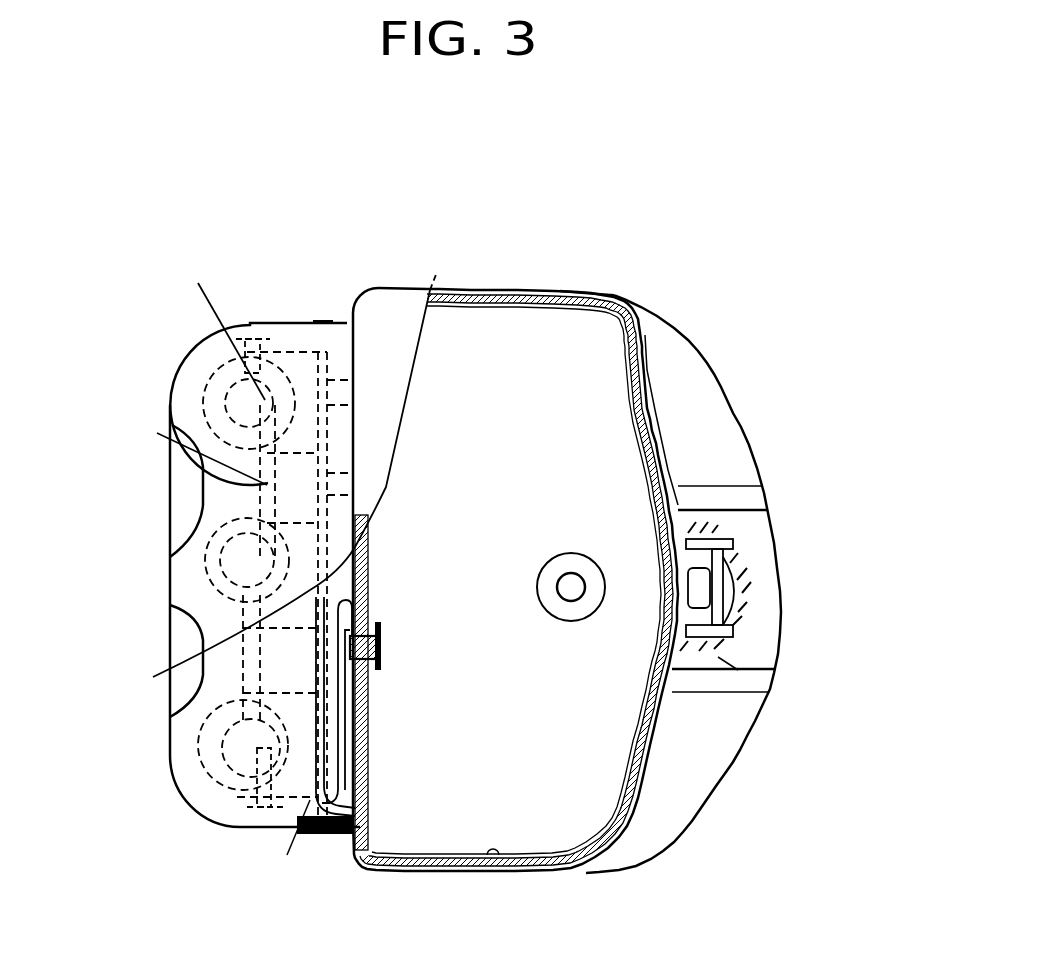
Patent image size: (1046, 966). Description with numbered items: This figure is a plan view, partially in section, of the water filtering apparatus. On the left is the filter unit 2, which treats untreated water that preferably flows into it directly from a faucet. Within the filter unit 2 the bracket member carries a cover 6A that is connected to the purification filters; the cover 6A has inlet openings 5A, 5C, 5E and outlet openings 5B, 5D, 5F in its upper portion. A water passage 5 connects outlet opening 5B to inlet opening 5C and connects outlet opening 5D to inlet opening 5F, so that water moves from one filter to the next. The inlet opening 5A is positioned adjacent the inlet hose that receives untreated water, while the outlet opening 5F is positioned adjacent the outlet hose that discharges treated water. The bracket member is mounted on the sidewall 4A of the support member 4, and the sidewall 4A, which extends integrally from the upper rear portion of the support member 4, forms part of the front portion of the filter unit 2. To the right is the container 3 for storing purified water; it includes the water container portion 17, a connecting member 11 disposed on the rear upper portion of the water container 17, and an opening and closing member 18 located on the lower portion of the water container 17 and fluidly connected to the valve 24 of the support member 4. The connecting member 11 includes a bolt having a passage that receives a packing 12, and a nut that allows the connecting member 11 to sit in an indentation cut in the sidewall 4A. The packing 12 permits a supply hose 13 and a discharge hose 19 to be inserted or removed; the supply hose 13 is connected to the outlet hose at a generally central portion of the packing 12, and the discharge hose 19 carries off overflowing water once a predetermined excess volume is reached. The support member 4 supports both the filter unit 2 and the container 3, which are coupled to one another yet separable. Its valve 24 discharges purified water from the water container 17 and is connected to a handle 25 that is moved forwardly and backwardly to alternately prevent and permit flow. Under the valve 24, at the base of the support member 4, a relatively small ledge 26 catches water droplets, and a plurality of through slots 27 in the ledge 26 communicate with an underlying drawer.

The filter unit 2 is at (163, 553).
The container 3 is at (580, 290).
The support member 4 is at (703, 327).
The sidewall 4A is at (355, 550).
The water passage 5 is at (157, 433).
The inlet opening 5A is at (263, 750).
The outlet opening 5B is at (250, 713).
The inlet opening 5C is at (243, 597).
The outlet opening 5D is at (265, 575).
The inlet opening 5E is at (243, 353).
The outlet opening 5F is at (245, 350).
The cover 6A is at (223, 767).
The connecting member 11 is at (378, 630).
The packing 12 is at (378, 648).
The supply hose 13 is at (343, 827).
The water container portion 17 is at (482, 862).
The opening and closing member 18 is at (560, 607).
The discharge hose 19 is at (347, 632).
The valve 24 is at (745, 538).
The handle 25 is at (715, 595).
The ledge 26 is at (763, 647).
The through slots 27 is at (738, 670).